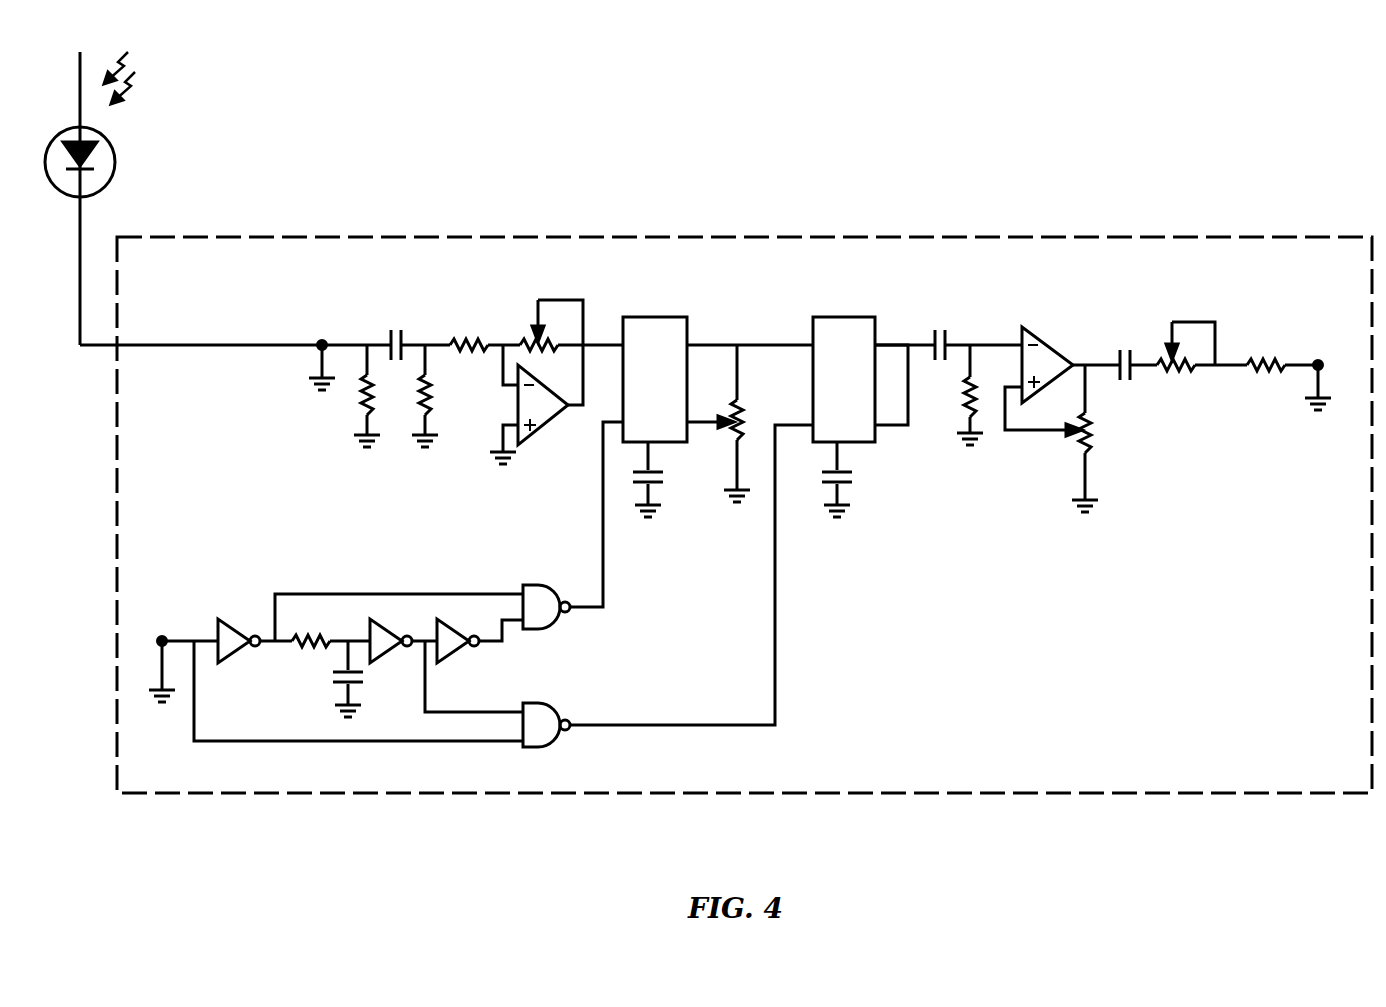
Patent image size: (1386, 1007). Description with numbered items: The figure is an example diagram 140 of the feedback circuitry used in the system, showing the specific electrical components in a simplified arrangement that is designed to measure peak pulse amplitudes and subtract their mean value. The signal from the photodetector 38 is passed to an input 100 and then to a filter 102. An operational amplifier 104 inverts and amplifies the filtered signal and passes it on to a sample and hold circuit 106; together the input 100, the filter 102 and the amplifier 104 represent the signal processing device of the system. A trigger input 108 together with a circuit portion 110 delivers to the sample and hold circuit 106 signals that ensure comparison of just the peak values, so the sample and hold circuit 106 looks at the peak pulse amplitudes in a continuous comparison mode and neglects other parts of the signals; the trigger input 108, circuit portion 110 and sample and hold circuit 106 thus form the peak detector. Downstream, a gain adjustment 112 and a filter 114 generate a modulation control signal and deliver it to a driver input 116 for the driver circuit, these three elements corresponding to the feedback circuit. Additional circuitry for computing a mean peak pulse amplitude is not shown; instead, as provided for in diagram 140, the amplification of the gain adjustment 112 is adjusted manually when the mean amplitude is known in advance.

The photodetector 38 is at (115, 152).
The input 100 is at (322, 345).
The filter 102 is at (372, 295).
The operational amplifier 104 is at (527, 470).
The sample and hold circuit 106 is at (752, 291).
The trigger input 108 is at (162, 641).
The circuit portion 110 is at (361, 564).
The gain adjustment 112 is at (1028, 482).
The filter 114 is at (1076, 293).
The driver input 116 is at (1318, 365).
The diagram 140 is at (537, 237).